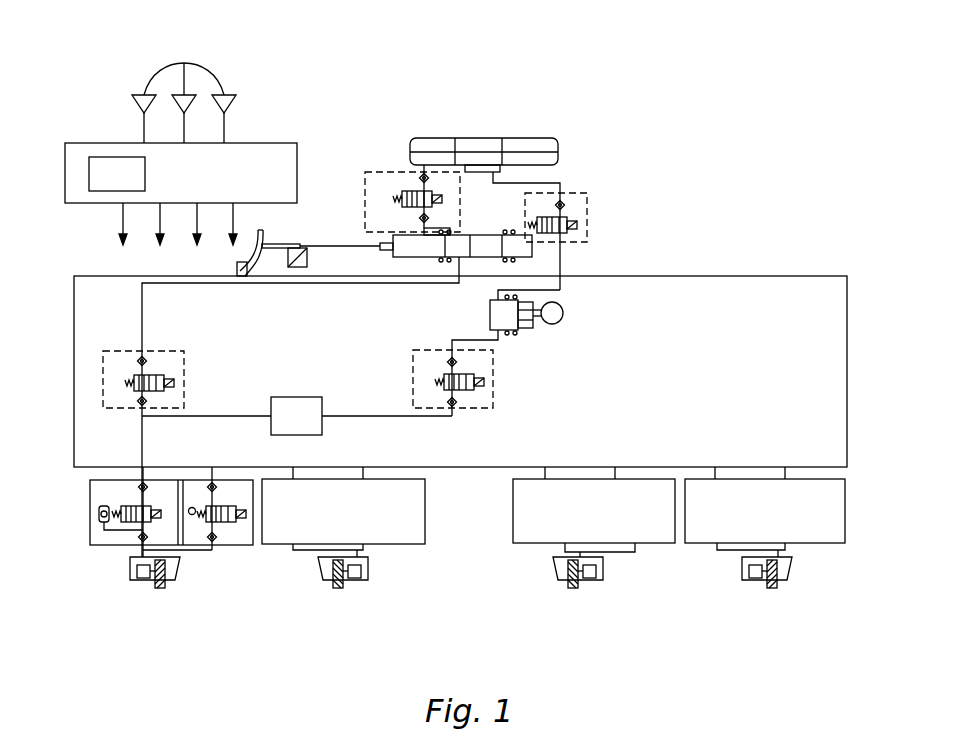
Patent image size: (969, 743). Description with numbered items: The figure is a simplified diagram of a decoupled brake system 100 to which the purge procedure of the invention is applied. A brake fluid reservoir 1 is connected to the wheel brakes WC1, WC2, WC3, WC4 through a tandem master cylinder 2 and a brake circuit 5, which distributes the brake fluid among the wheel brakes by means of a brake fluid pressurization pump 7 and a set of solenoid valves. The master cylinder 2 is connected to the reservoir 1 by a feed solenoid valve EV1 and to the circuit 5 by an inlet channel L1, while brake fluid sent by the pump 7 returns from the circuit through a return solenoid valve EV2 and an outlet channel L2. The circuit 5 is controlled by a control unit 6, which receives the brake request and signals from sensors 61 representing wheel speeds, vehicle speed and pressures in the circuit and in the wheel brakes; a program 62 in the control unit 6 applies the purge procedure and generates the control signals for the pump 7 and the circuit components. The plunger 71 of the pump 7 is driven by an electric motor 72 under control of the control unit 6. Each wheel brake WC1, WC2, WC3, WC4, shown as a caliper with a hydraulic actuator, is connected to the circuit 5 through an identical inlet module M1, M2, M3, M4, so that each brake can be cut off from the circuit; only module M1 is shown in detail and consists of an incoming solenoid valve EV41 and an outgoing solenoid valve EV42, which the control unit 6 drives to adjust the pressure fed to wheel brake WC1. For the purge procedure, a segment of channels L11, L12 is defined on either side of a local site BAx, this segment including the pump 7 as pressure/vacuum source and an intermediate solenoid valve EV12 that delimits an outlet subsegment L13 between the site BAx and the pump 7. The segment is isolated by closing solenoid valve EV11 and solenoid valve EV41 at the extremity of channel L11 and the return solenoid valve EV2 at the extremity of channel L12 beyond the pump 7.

The decoupled brake system 100 is at (102, 105).
The sensors 61 is at (184, 88).
The program 62 is at (117, 174).
The control unit 6 is at (240, 185).
The brake fluid reservoir 1 is at (535, 138).
The tandem master cylinder 2 is at (478, 235).
The feed solenoid valve EV1 is at (387, 180).
The return solenoid valve EV2 is at (575, 197).
The brake circuit 5 is at (805, 322).
The inlet channel L1 is at (275, 283).
The outlet channel L2 is at (560, 290).
The outlet subsegment L13 is at (460, 340).
The brake fluid pressurization pump 7 is at (574, 341).
The plunger 71 is at (515, 332).
The electric motor 72 is at (535, 322).
The solenoid valve EV11 is at (165, 380).
The intermediate solenoid valve EV12 is at (477, 393).
The local site BAx is at (296, 416).
The channel L11 is at (197, 416).
The channel L12 is at (345, 416).
The inlet module M1 is at (150, 530).
The inlet module M2 is at (386, 535).
The inlet module M3 is at (537, 533).
The inlet module M4 is at (700, 533).
The incoming solenoid valve EV41 is at (140, 503).
The outgoing solenoid valve EV42 is at (222, 525).
The wheel brake WC1 is at (136, 585).
The wheel brake WC2 is at (363, 585).
The wheel brake WC3 is at (560, 585).
The wheel brake WC4 is at (787, 585).